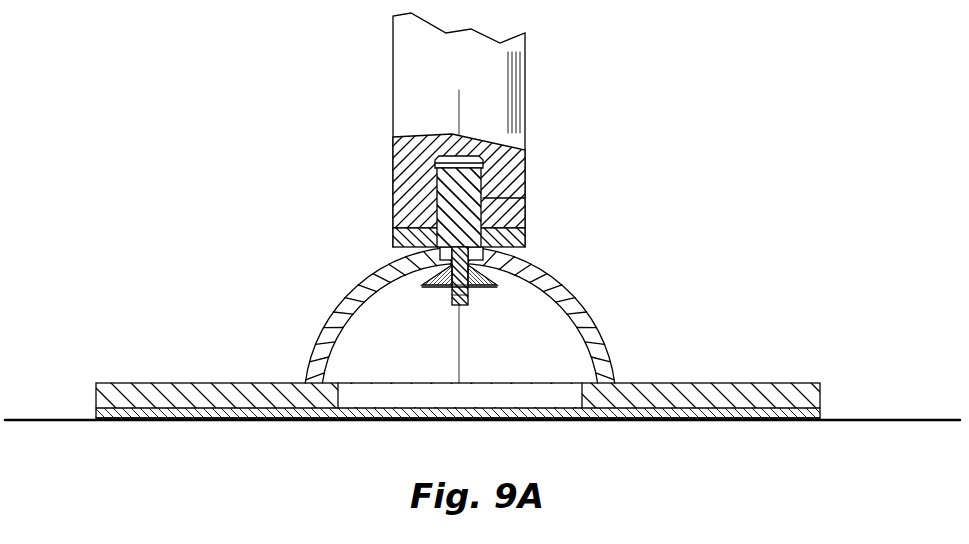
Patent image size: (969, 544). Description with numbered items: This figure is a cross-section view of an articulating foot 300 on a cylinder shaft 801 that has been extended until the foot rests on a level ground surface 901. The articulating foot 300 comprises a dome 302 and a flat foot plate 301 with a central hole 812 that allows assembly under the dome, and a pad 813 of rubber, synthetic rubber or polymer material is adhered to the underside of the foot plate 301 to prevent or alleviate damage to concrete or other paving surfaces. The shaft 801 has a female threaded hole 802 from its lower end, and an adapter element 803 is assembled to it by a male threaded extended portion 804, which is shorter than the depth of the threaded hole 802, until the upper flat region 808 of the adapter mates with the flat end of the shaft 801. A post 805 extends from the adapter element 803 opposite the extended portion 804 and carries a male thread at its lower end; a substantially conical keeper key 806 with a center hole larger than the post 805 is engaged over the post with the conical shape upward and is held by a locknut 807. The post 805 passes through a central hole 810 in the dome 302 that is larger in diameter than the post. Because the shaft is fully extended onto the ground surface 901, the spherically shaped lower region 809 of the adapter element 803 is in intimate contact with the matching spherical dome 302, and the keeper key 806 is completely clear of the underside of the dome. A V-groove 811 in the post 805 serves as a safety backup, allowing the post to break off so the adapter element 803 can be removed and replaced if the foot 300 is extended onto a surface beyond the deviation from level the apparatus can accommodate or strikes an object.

The articulating foot 300 is at (468, 315).
The foot plate 301 is at (240, 383).
The dome 302 is at (342, 292).
The shaft 801 is at (393, 63).
The female threaded hole 802 is at (393, 193).
The adapter element 803 is at (386, 240).
The male threaded extended portion 804 is at (525, 198).
The post 805 is at (457, 303).
The keeper key 806 is at (438, 286).
The locknut 807 is at (478, 297).
The upper flat region 808 is at (524, 247).
The lower region 809 is at (532, 278).
The central hole 810 is at (438, 254).
The V-groove 811 is at (478, 270).
The central hole 812 is at (352, 406).
The pad 813 is at (638, 422).
The ground surface 901 is at (33, 420).